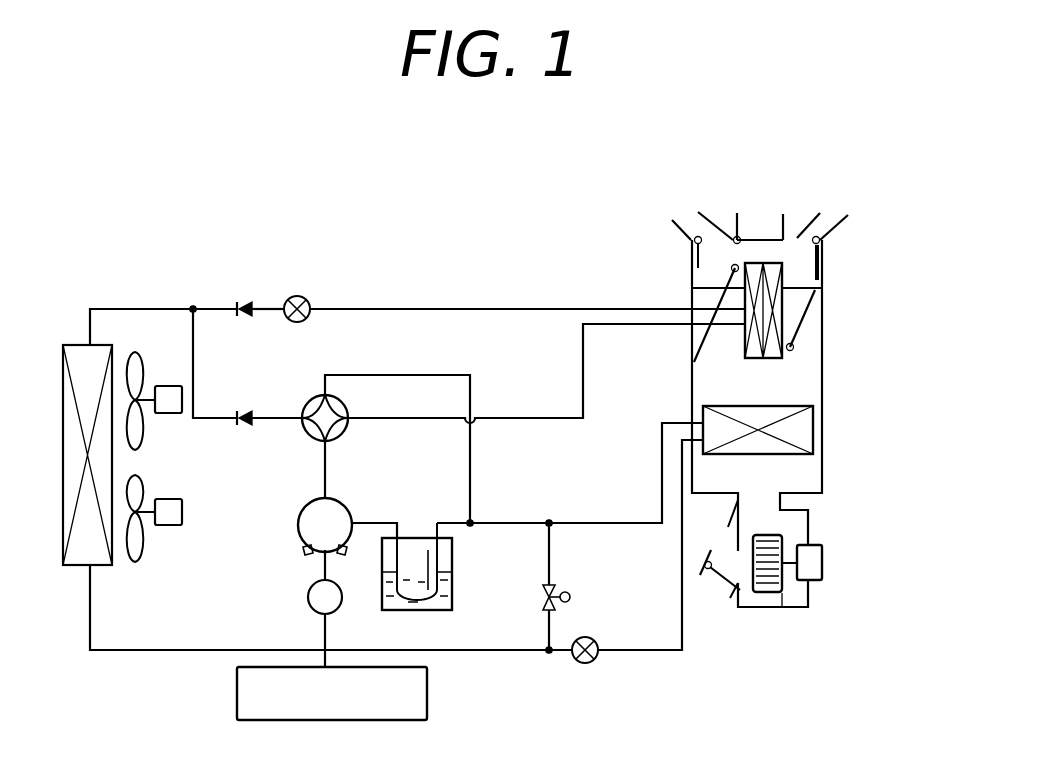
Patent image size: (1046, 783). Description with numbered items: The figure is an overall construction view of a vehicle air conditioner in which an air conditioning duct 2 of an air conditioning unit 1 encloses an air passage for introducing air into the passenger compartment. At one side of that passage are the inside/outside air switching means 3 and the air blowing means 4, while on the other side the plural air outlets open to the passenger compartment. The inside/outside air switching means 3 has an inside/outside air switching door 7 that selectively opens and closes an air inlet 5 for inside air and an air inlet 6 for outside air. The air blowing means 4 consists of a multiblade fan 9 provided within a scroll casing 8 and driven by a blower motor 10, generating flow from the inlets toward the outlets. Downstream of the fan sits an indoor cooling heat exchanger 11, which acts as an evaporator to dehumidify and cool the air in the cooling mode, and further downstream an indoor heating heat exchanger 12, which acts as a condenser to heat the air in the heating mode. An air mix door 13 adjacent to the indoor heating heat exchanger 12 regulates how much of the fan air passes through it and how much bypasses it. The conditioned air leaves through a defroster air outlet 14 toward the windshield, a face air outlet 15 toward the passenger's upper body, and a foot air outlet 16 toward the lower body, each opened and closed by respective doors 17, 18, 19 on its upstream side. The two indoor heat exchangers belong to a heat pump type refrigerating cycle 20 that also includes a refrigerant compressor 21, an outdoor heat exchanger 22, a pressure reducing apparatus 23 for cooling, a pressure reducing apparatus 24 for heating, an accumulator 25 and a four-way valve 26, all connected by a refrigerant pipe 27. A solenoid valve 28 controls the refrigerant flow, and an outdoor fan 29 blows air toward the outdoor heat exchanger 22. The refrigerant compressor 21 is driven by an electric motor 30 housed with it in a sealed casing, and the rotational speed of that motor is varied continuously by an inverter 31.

The air conditioning unit 1 is at (826, 455).
The air conditioning duct 2 is at (826, 368).
The inside/outside air switching means 3 is at (703, 585).
The air blowing means 4 is at (774, 606).
The air inlet 5 is at (720, 588).
The air inlet 6 is at (720, 534).
The inside/outside air switching door 7 is at (724, 572).
The scroll casing 8 is at (809, 609).
The multiblade fan 9 is at (782, 533).
The blower motor 10 is at (814, 567).
The indoor cooling heat exchanger 11 is at (808, 428).
The indoor heating heat exchanger 12 is at (800, 290).
The air mix door 13 is at (697, 290).
The defroster air outlet 14 is at (689, 213).
The face air outlet 15 is at (761, 209).
The foot air outlet 16 is at (826, 214).
The door 17 is at (696, 256).
The door 18 is at (762, 240).
The door 19 is at (822, 257).
The refrigerating cycle 20 is at (161, 262).
The refrigerant compressor 21 is at (340, 500).
The outdoor heat exchanger 22 is at (103, 345).
The pressure reducing apparatus for cooling 23 is at (587, 663).
The pressure reducing apparatus for heating 24 is at (306, 300).
The accumulator 25 is at (452, 587).
The four-way valve 26 is at (308, 432).
The refrigerant pipe 27 is at (430, 307).
The solenoid valve 28 is at (560, 583).
The outdoor fan 29 is at (168, 405).
The electric motor 30 is at (308, 602).
The inverter 31 is at (427, 692).